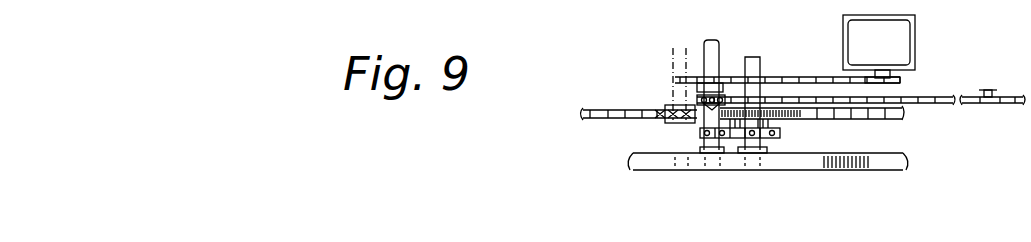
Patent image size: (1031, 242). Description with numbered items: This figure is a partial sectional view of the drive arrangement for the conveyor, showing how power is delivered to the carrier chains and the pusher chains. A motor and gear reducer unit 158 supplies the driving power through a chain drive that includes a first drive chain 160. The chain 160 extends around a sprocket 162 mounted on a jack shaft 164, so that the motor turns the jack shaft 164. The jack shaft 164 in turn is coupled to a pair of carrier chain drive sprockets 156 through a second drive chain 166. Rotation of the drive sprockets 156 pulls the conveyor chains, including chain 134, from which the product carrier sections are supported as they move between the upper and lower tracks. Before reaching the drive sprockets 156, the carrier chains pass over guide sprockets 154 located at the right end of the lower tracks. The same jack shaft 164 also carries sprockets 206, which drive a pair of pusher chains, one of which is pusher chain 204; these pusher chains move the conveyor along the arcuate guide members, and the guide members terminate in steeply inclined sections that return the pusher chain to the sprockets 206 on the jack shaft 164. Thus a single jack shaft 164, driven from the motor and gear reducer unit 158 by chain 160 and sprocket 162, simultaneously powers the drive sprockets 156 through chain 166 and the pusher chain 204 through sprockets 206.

The chain 134 is at (868, 112).
The guide sprockets 154 is at (670, 123).
The carrier chain drive sprockets 156 is at (780, 122).
The motor and gear reducer unit 158 is at (905, 38).
The first drive chain 160 is at (823, 77).
The sprocket 162 is at (723, 78).
The jack shaft 164 is at (704, 42).
The second drive chain 166 is at (730, 153).
The pusher chain 204 is at (975, 100).
The sprockets 206 is at (697, 127).